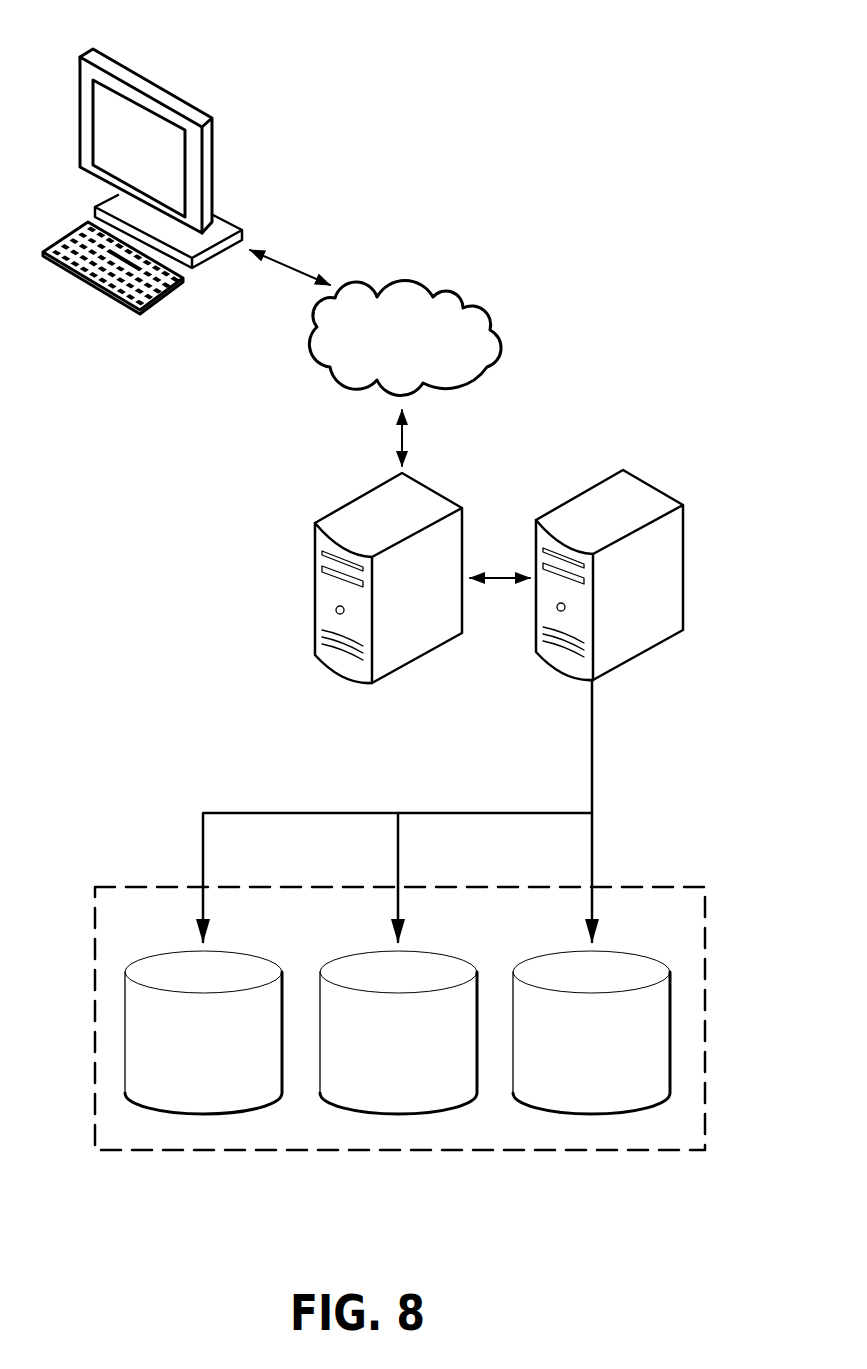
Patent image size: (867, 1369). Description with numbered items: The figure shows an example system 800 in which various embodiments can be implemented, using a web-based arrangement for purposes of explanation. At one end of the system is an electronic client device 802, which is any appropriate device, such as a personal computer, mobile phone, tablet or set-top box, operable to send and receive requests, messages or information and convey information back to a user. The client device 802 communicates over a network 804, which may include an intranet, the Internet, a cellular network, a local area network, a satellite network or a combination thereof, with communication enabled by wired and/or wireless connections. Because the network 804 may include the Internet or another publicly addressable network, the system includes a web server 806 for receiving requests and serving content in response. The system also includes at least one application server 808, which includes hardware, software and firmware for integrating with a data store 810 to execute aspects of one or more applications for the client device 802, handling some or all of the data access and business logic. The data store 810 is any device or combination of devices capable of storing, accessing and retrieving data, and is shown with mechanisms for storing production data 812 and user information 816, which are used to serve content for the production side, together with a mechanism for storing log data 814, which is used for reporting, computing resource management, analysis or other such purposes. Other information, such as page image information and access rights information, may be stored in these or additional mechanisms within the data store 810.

The system 800 is at (643, 320).
The electronic client device 802 is at (163, 86).
The network 804 is at (440, 290).
The web server 806 is at (315, 577).
The application server 808 is at (560, 668).
The data store 810 is at (130, 1150).
The production data 812 is at (203, 1115).
The log data 814 is at (398, 1115).
The user information 816 is at (592, 1115).